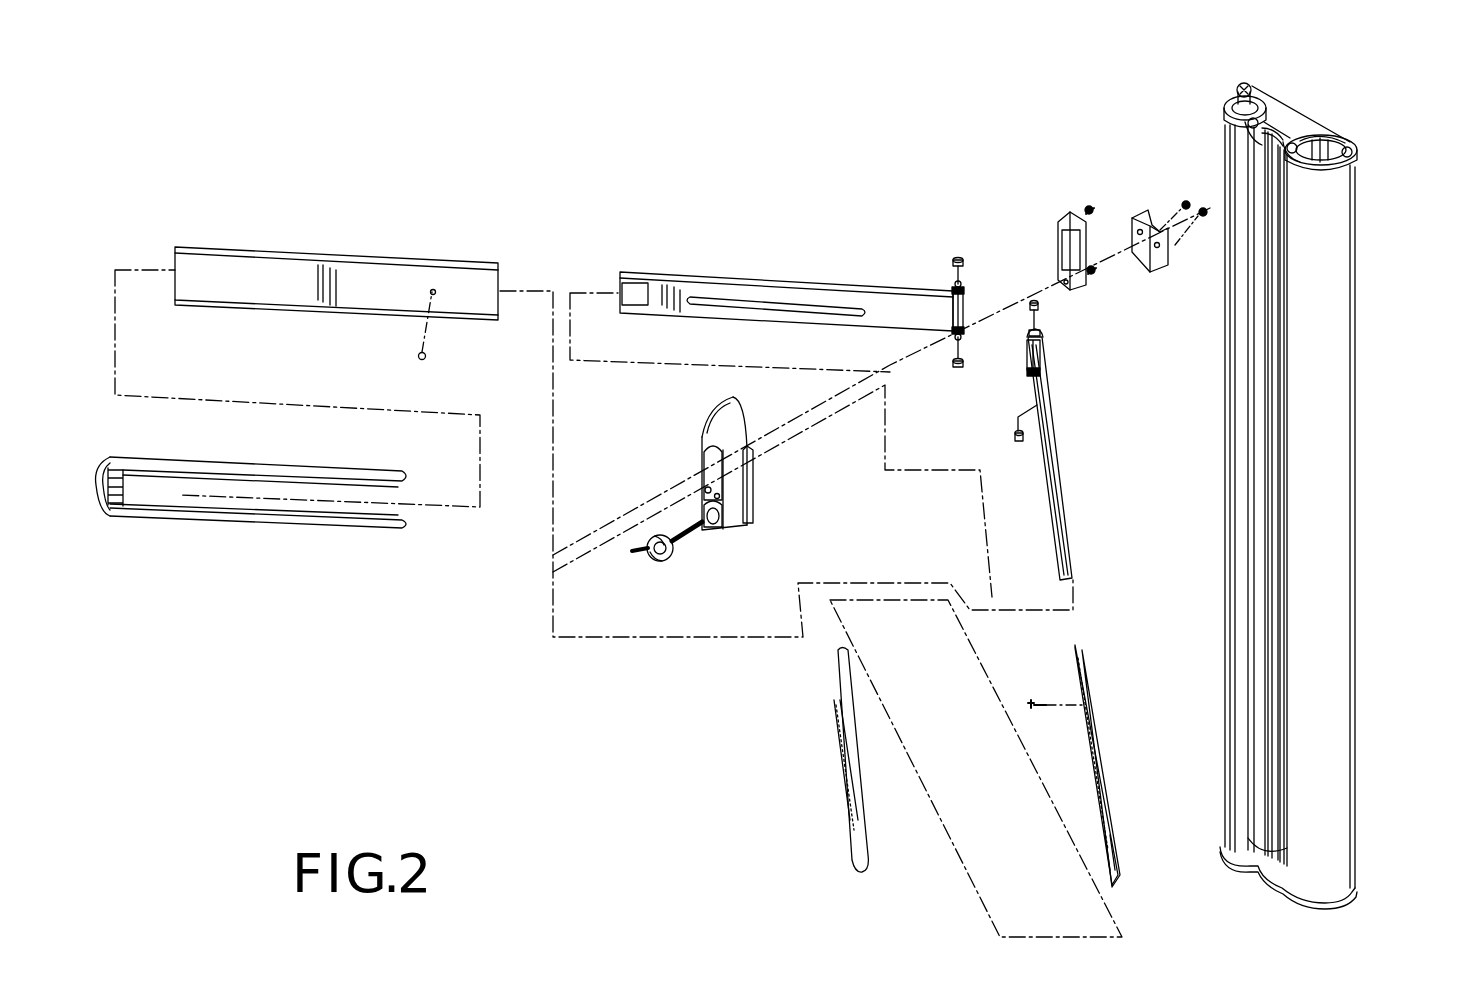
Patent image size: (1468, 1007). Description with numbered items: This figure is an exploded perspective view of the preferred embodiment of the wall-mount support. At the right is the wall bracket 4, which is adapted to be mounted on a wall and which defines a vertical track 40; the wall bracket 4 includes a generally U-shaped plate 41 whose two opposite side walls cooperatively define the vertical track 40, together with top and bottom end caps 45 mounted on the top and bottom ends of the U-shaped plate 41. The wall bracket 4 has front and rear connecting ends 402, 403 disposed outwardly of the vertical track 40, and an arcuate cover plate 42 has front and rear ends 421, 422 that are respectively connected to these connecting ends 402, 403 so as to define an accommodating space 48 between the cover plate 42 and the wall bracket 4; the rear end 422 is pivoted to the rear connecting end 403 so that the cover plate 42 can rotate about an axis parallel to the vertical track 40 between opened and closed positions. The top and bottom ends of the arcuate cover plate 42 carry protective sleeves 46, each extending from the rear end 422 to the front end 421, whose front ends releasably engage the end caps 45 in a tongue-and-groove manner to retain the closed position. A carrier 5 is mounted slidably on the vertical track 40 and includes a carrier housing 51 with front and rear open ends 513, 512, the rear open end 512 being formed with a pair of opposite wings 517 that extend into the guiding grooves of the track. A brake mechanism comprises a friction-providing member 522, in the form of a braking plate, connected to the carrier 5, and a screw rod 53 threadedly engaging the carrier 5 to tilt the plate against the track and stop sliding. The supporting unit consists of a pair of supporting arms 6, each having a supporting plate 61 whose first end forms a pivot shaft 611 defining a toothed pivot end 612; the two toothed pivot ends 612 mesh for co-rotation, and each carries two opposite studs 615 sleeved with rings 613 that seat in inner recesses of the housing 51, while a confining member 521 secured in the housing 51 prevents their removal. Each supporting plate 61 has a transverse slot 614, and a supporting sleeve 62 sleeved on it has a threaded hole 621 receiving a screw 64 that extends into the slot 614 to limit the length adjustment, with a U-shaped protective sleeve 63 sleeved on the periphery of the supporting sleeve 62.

The wall bracket 4 is at (1294, 473).
The vertical track 40 is at (1278, 393).
The U-shaped plate 41 is at (1270, 518).
The arcuate cover plate 42 is at (1235, 356).
The end caps 45 is at (1318, 125).
The protective sleeves 46 is at (1232, 108).
The accommodating space 48 is at (1232, 100).
The front connecting end 402 is at (1300, 132).
The rear connecting end 403 is at (1340, 154).
The front end 421 is at (1300, 165).
The rear end 422 is at (1355, 165).
The carrier 5 is at (745, 545).
The carrier housing 51 is at (722, 406).
The rear open end 512 is at (748, 430).
The front open end 513 is at (704, 458).
The wings 517 is at (756, 480).
The screw rod 53 is at (632, 551).
The confining member 521 is at (1058, 250).
The friction-providing member 522 is at (1130, 235).
The supporting arms 6 is at (562, 232).
The supporting plate 61 is at (748, 288).
The pivot shaft 611 is at (955, 310).
The toothed pivot end 612 is at (965, 291).
The rings 613 is at (957, 257).
The slot 614 is at (833, 305).
The studs 615 is at (957, 283).
The supporting sleeve 62 is at (297, 290).
The threaded hole 621 is at (433, 290).
The U-shaped protective sleeve 63 is at (245, 520).
The screw 64 is at (418, 356).